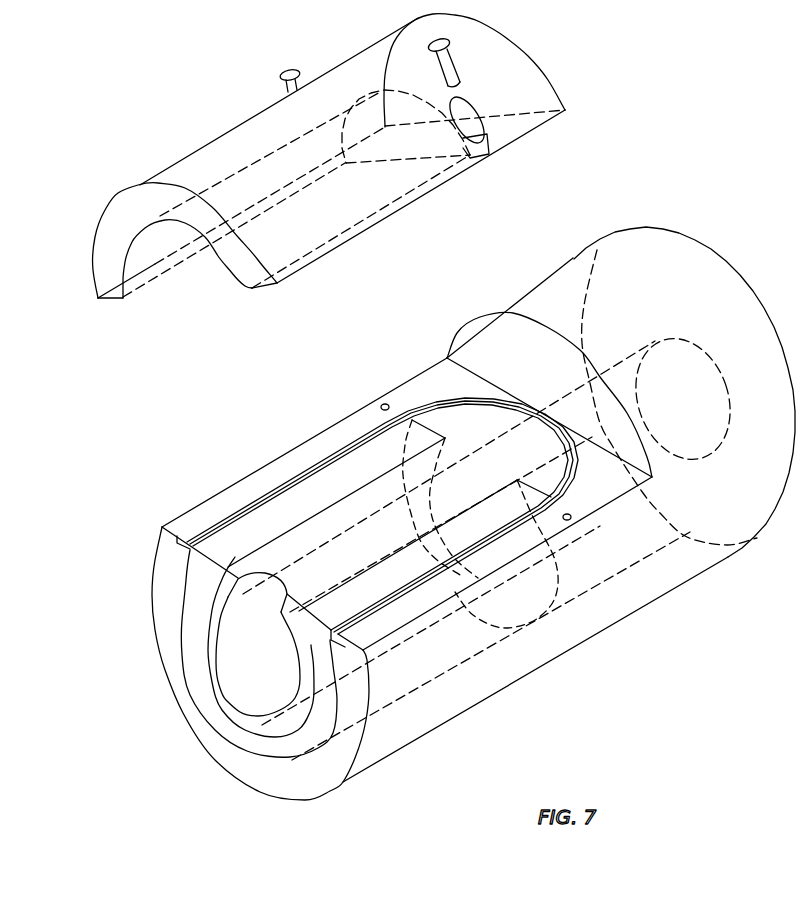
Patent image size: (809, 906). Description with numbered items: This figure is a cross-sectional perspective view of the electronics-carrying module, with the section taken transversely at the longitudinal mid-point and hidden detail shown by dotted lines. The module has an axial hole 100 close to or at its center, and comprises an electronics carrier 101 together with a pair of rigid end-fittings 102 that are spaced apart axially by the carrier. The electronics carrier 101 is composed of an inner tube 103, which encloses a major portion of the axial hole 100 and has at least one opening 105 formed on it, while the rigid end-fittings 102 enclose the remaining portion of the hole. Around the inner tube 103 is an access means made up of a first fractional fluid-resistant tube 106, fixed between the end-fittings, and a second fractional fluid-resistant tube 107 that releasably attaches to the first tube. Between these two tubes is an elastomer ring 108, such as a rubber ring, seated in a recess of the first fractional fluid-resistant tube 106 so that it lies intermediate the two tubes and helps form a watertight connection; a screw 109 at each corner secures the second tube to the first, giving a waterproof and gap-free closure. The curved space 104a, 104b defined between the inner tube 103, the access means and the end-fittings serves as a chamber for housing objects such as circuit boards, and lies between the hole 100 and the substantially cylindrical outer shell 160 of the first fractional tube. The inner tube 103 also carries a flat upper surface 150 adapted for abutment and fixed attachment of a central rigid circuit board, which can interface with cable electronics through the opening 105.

The axial hole 100 is at (253, 665).
The electronics carrier 101 is at (563, 653).
The rigid end-fittings 102 is at (573, 257).
The inner tube 103 is at (260, 707).
The curved space 104a is at (193, 587).
The curved space 104b is at (185, 272).
The opening 105 is at (260, 583).
The first fractional fluid-resistant tube 106 is at (417, 385).
The second fractional fluid-resistant tube 107 is at (212, 145).
The elastomer ring 108 is at (325, 458).
The screw 109 is at (280, 76).
The flat upper surface 150 is at (250, 563).
The outer shell 160 is at (157, 588).